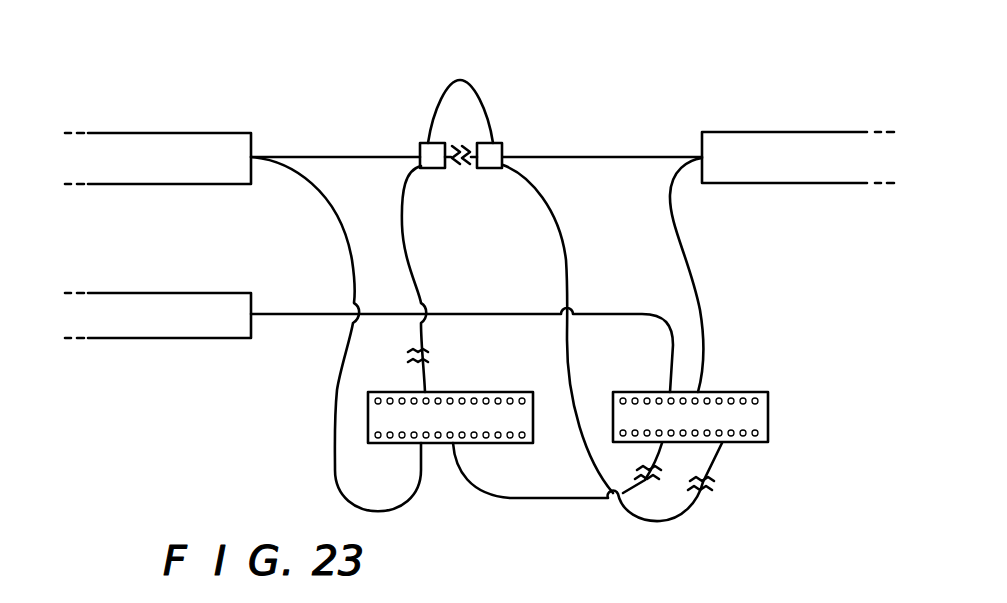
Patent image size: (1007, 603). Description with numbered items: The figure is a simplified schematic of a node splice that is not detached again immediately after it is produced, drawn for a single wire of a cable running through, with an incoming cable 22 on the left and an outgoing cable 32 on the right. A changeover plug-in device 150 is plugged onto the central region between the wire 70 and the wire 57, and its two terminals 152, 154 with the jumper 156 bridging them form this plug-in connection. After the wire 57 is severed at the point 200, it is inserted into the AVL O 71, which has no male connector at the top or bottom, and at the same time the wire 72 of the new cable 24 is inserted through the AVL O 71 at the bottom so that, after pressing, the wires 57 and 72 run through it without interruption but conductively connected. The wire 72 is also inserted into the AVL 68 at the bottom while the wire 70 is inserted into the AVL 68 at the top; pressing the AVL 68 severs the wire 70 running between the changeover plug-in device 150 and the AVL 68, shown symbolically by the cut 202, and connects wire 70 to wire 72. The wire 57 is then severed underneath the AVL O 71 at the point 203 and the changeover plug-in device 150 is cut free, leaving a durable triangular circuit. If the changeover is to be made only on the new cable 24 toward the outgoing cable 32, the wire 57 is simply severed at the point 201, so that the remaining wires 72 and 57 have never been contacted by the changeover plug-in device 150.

The incoming cable 22 is at (140, 137).
The new cable 24 is at (120, 297).
The outgoing cable 32 is at (755, 135).
The wire 57 is at (585, 157).
The AVL 68 is at (375, 445).
The wire 70 is at (330, 157).
The AVL O 71 is at (770, 402).
The wire 72 is at (318, 318).
The changeover plug-in device 150 is at (415, 97).
The first terminal 152 is at (423, 144).
The second terminal 154 is at (500, 143).
The jumper 156 is at (461, 82).
The point 200 is at (455, 172).
The point 201 is at (722, 484).
The cut 202 is at (441, 351).
The point 203 is at (665, 482).